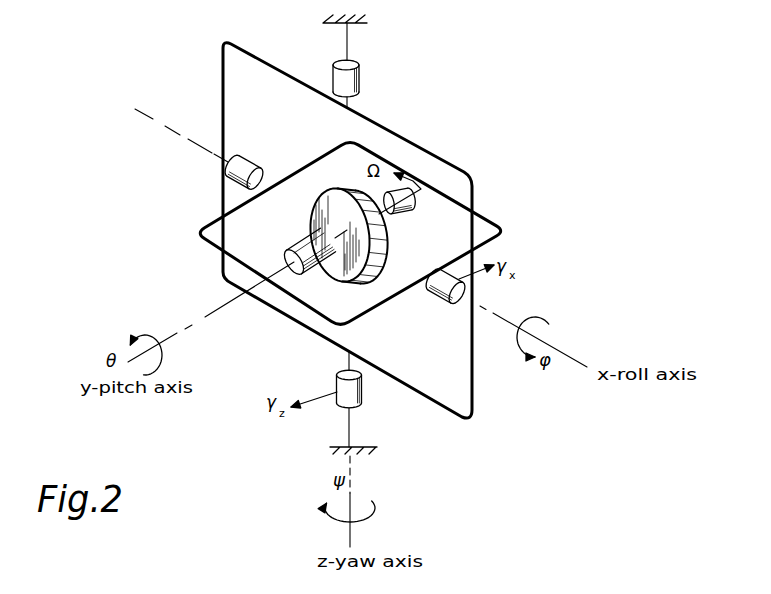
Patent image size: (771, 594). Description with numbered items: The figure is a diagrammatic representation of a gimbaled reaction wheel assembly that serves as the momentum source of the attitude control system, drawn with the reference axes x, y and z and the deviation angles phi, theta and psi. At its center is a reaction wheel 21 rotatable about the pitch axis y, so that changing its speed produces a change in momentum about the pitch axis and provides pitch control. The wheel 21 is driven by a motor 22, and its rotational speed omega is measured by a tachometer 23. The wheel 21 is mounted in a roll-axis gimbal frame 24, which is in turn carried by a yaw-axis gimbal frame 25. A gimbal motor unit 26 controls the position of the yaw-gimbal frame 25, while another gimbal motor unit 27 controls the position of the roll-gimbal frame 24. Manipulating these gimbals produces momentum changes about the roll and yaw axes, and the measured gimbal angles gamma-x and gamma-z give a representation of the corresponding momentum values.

The reaction wheel 21 is at (322, 210).
The motor 22 is at (285, 258).
The tachometer 23 is at (400, 216).
The roll-axis gimbal frame 24 is at (197, 240).
The yaw-axis gimbal frame 25 is at (222, 90).
The gimbal motor unit 26 is at (361, 78).
The gimbal motor unit 27 is at (247, 165).